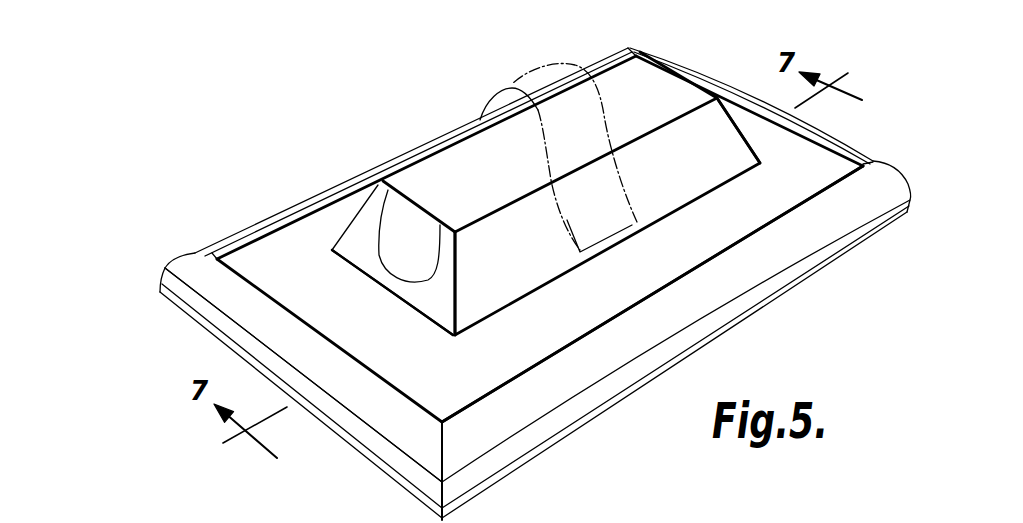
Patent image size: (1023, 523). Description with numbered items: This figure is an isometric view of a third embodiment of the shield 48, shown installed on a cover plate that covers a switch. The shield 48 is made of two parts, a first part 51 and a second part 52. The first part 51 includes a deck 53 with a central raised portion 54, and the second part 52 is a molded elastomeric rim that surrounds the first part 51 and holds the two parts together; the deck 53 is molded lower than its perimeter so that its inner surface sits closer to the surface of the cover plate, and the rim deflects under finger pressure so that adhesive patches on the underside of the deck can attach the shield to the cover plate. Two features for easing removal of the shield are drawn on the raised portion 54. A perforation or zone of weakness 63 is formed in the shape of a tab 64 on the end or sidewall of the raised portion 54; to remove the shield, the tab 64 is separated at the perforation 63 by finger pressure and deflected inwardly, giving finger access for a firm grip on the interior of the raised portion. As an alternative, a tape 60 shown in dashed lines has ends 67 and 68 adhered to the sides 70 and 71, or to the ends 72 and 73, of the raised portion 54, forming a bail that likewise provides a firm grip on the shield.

The shield 48 is at (877, 145).
The first part 51 is at (305, 222).
The second part 52 is at (320, 404).
The deck 53 is at (534, 337).
The central raised portion 54 is at (443, 173).
The tape 60 is at (590, 102).
The perforation or zone of weakness 63 is at (436, 276).
The tab 64 is at (397, 263).
The end of tape 67 is at (610, 206).
The end of tape 68 is at (453, 137).
The side of raised portion 70 is at (355, 215).
The side of raised portion 71 is at (720, 153).
The end of raised portion 72 is at (447, 313).
The end of raised portion 73 is at (738, 122).